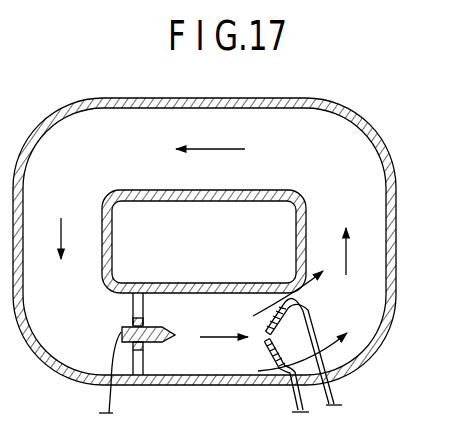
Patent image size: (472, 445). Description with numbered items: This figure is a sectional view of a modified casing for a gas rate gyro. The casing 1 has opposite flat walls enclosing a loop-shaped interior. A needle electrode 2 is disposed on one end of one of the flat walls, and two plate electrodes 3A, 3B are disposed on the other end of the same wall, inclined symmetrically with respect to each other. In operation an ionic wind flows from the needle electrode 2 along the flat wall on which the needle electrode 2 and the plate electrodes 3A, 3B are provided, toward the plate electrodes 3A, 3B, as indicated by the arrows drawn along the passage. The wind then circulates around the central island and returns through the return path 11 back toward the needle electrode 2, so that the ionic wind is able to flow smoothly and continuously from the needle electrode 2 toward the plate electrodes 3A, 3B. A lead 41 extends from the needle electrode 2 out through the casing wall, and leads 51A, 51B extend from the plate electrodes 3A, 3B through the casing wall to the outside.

The casing 1 is at (297, 98).
The return path 11 is at (351, 158).
The needle electrode 2 is at (120, 329).
The plate electrode 3A is at (283, 321).
The plate electrode 3B is at (267, 347).
The lead wire 41 is at (104, 402).
The lead wire 51A is at (334, 398).
The lead wire 51B is at (297, 409).